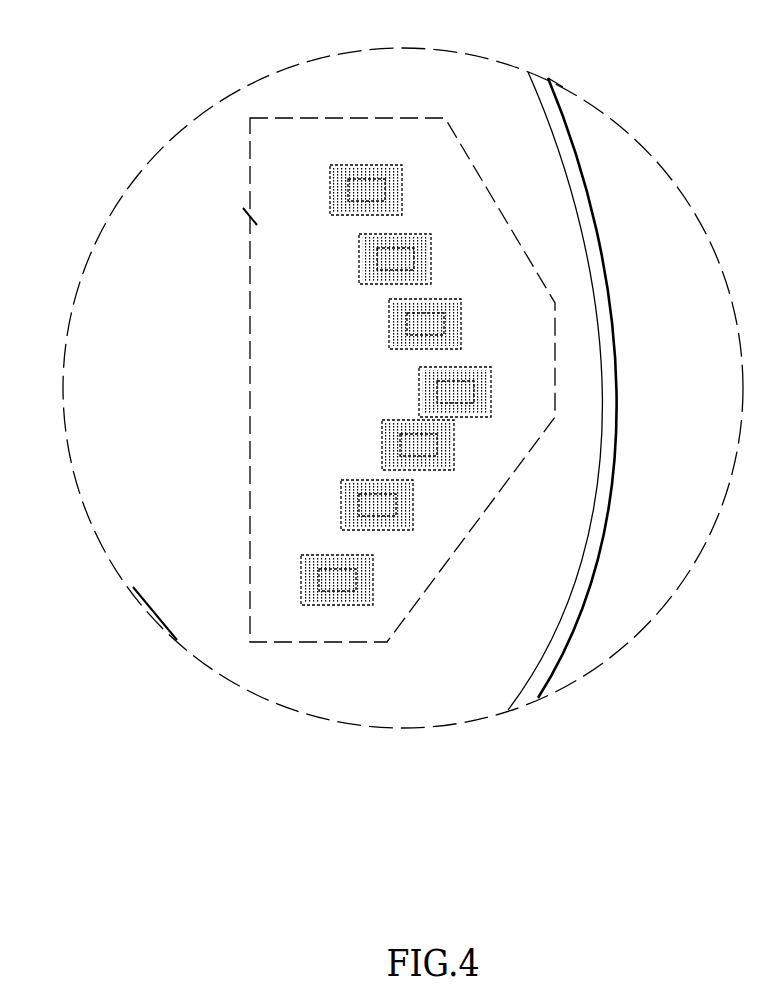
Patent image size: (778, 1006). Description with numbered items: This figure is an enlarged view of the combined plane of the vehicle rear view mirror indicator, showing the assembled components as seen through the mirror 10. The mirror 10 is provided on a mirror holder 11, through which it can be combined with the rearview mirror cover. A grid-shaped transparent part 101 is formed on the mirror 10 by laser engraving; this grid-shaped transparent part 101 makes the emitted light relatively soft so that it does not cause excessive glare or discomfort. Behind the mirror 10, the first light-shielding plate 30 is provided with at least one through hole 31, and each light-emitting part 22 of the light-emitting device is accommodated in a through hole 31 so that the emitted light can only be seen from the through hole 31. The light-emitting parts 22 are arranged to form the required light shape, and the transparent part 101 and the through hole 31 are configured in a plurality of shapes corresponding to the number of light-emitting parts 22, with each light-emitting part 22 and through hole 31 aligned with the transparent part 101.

The mirror 10 is at (147, 585).
The mirror holder 11 is at (577, 630).
The first light-shielding plate 30 is at (257, 225).
The through hole 31 is at (398, 165).
The grid-shaped transparent part 101 is at (338, 182).
The light-emitting part 22 is at (365, 180).